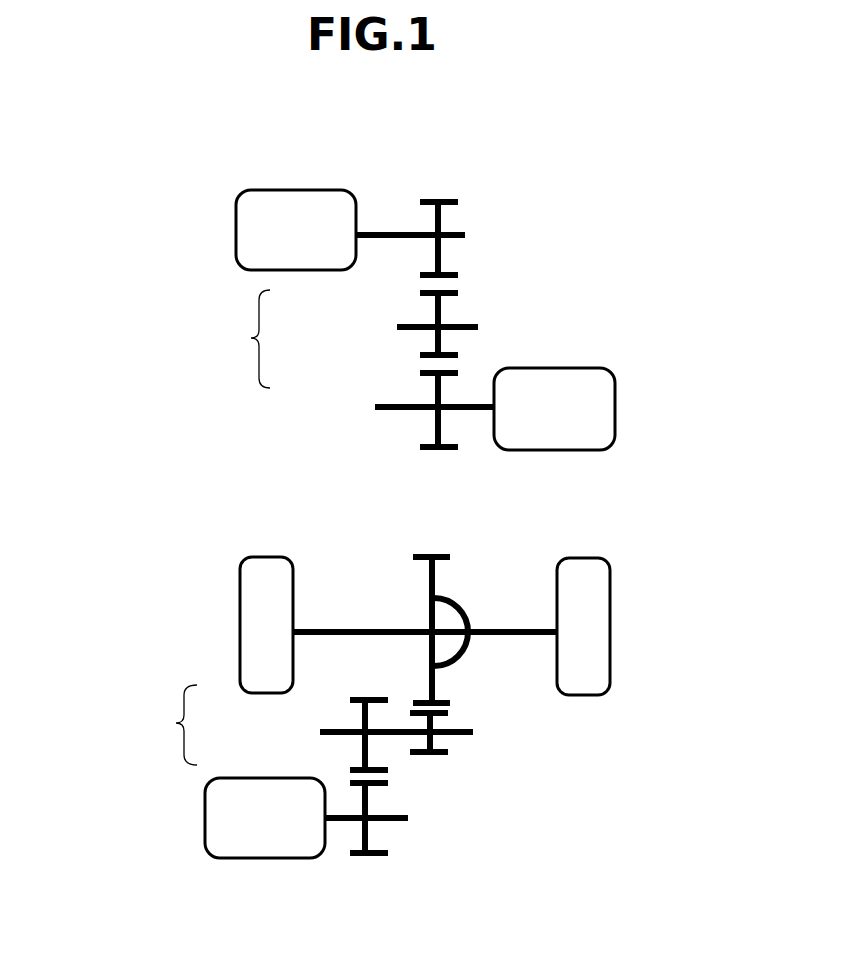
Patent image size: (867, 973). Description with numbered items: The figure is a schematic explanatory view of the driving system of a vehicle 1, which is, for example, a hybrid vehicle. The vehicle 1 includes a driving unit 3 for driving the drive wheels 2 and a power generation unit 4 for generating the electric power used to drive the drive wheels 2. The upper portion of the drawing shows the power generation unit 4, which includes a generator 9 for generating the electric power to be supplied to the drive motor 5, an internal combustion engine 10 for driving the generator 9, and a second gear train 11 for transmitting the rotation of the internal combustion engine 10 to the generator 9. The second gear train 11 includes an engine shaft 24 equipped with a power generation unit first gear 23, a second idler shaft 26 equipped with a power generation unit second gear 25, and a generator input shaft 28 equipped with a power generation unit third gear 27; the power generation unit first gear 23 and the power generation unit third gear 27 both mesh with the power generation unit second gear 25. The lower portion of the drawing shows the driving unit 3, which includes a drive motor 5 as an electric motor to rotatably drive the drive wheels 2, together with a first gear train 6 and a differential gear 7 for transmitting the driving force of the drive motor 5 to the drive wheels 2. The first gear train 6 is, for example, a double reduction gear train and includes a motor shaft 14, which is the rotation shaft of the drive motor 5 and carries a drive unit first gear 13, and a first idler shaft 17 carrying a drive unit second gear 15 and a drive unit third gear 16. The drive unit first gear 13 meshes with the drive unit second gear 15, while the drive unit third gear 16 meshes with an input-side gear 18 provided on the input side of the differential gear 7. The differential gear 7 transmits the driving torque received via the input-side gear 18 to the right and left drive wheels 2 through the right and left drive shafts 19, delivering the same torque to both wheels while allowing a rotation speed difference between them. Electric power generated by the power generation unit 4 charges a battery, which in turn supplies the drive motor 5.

The vehicle 1 is at (150, 335).
The drive wheels 2 is at (240, 587).
The driving unit 3 is at (538, 798).
The power generation unit 4 is at (495, 226).
The drive motor 5 is at (250, 860).
The first gear train 6 is at (176, 723).
The differential gear 7 is at (450, 600).
The generator 9 is at (300, 189).
The internal combustion engine 10 is at (620, 405).
The second gear train 11 is at (251, 338).
The drive unit first gear 13 is at (375, 856).
The motor shaft 14 is at (342, 816).
The drive unit second gear 15 is at (388, 771).
The drive unit third gear 16 is at (440, 755).
The first idler shaft 17 is at (340, 730).
The input-side gear 18 is at (447, 698).
The drive shafts 19 is at (330, 630).
The power generation unit first gear 23 is at (447, 453).
The engine shaft 24 is at (383, 405).
The power generation unit second gear 25 is at (455, 352).
The second idler shaft 26 is at (402, 326).
The power generation unit third gear 27 is at (455, 271).
The generator input shaft 28 is at (382, 239).